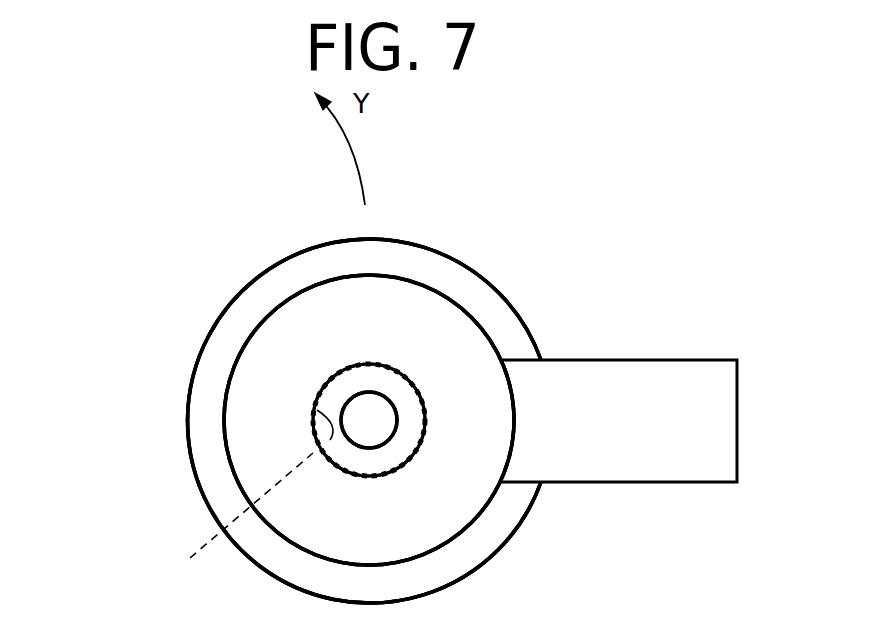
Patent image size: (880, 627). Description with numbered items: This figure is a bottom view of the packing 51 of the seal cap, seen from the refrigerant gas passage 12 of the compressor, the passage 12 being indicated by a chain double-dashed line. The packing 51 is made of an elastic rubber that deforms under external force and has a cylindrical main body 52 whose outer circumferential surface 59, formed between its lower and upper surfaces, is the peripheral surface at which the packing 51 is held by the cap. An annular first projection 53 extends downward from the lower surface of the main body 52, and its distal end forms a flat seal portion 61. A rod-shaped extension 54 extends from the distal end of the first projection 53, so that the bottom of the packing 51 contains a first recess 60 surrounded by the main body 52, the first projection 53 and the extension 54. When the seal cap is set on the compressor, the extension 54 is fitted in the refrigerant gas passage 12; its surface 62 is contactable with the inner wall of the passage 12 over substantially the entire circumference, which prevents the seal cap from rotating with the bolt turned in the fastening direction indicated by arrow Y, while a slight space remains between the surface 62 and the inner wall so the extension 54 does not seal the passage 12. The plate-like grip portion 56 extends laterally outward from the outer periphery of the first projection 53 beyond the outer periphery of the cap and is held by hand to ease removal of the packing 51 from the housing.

The refrigerant gas passage 12 is at (237, 524).
The packing 51 is at (228, 294).
The main body 52 is at (210, 370).
The first projection 53 is at (312, 283).
The extension 54 is at (407, 428).
The grip portion 56 is at (657, 467).
The circumferential surface 59 is at (190, 440).
The first recess 60 is at (380, 412).
The seal portion 61 is at (290, 342).
The surface 62 is at (323, 392).